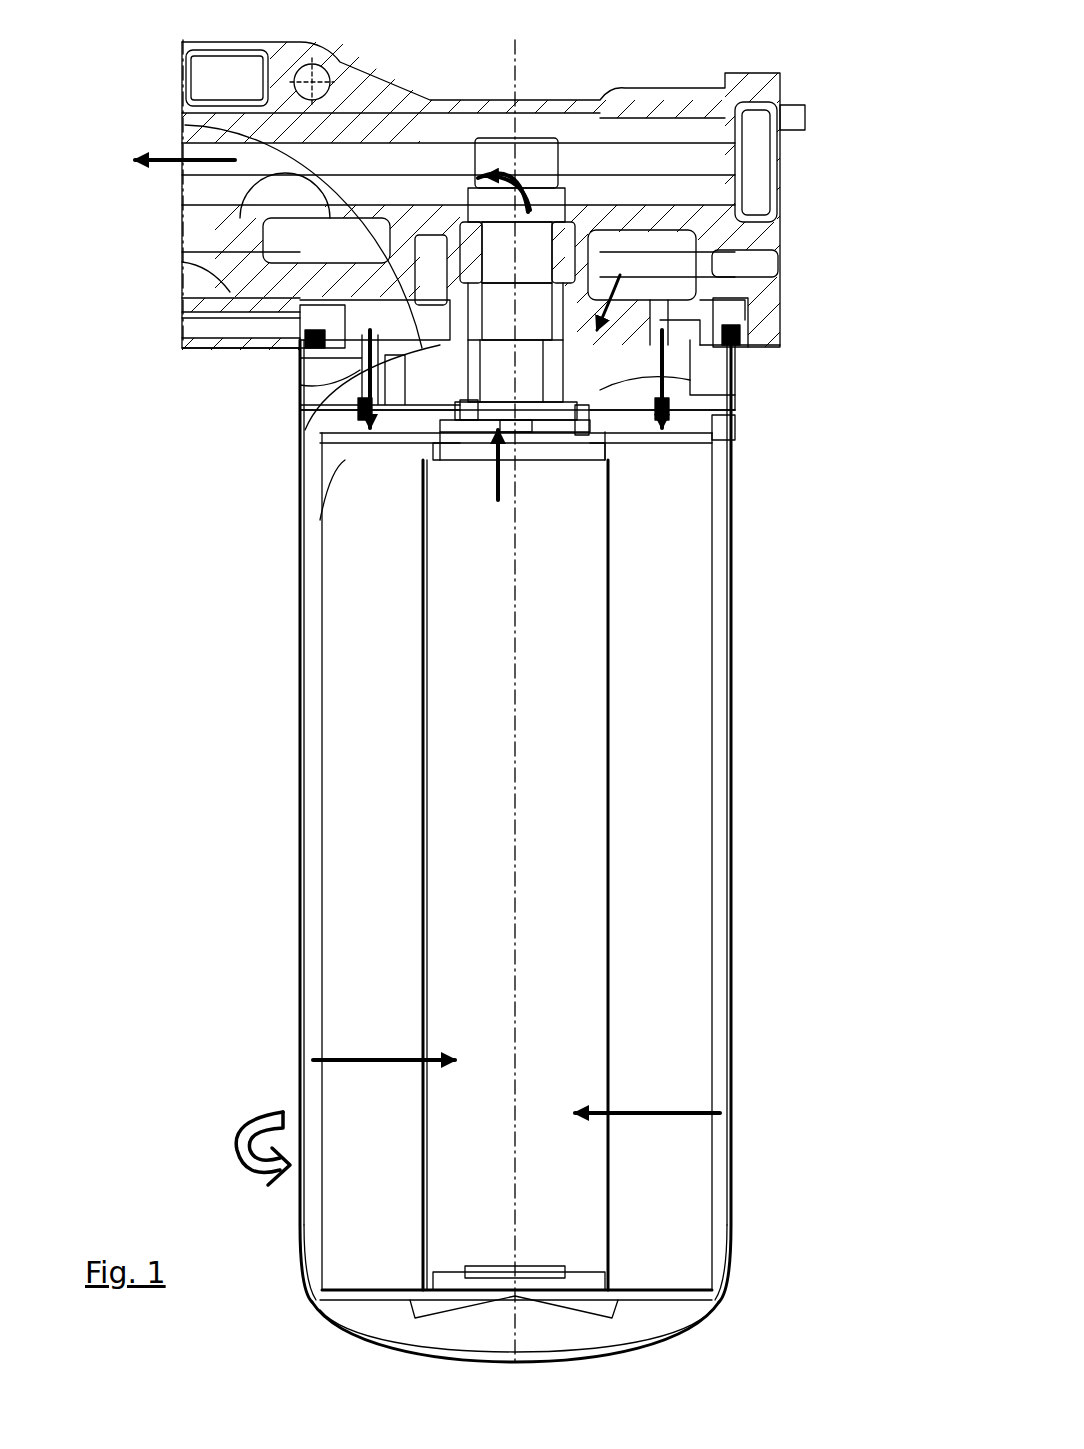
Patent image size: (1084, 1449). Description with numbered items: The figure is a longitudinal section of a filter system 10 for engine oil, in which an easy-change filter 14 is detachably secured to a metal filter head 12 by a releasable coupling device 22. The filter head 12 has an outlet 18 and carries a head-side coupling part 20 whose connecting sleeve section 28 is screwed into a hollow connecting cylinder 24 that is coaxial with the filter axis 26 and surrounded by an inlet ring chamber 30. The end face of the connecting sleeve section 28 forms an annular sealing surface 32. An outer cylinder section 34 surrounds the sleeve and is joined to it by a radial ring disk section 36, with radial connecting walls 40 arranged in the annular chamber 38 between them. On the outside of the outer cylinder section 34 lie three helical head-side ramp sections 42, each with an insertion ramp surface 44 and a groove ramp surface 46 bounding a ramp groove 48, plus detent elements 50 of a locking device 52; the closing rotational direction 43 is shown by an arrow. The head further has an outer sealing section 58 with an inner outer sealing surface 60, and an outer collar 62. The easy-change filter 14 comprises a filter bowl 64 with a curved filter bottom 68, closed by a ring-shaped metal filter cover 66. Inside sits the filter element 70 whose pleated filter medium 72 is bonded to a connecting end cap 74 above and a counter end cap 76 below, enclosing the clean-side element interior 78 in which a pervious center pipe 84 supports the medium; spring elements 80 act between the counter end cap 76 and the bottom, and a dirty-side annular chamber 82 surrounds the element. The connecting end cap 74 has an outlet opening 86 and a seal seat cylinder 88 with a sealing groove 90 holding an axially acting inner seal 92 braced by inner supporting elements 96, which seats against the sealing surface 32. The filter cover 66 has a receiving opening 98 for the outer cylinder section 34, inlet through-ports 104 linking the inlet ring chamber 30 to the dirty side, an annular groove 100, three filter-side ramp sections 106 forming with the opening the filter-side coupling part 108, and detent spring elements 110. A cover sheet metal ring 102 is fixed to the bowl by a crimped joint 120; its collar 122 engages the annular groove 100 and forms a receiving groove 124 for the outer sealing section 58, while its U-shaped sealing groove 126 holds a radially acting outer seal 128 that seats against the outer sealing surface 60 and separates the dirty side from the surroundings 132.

The filter system 10 is at (138, 63).
The filter head 12 is at (250, 55).
The easy-change filter 14 is at (300, 915).
The outlet 18 is at (190, 190).
The head-side coupling part 20 is at (642, 280).
The coupling device 22 is at (300, 372).
The connecting cylinder 24 is at (585, 240).
The filter axis 26 is at (520, 1020).
The connecting sleeve section 28 is at (506, 235).
The inlet ring chamber 30 is at (430, 345).
The sealing surface 32 is at (435, 445).
The outer cylinder section 34 is at (735, 435).
The radial ring disk section 36 is at (432, 320).
The annular chamber 38 is at (365, 447).
The radial connecting walls 40 is at (275, 228).
The head-side ramp sections 42 is at (300, 340).
The closing rotational direction 43 is at (232, 1155).
The insertion ramp surface 44 is at (628, 447).
The groove ramp surface 46 is at (340, 405).
The ramp groove 48 is at (335, 425).
The detent elements 50 is at (655, 292).
The locking device 52 is at (668, 330).
The outer sealing section 58 is at (300, 330).
The outer sealing surface 60 is at (245, 292).
The outer collar 62 is at (720, 290).
The filter bowl 64 is at (300, 1010).
The filter cover 66 is at (700, 392).
The filter bottom 68 is at (330, 1335).
The filter element 70 is at (340, 850).
The filter medium 72 is at (647, 1084).
The connecting end cap 74 is at (718, 445).
The counter end cap 76 is at (715, 1290).
The element interior 78 is at (410, 1131).
The spring elements 80 is at (640, 1320).
The dirty-side annular chamber 82 is at (722, 1150).
The center pipe 84 is at (425, 1100).
The outlet opening 86 is at (468, 452).
The seal seat cylinder 88 is at (565, 457).
The sealing groove 90 is at (520, 470).
The inner seal 92 is at (455, 482).
The inner supporting elements 96 is at (515, 445).
The receiving opening 98 is at (640, 470).
The annular groove 100 is at (735, 378).
The cover sheet metal ring 102 is at (700, 338).
The inlet through-ports 104 is at (300, 388).
The filter-side ramp sections 106 is at (295, 415).
The filter-side coupling part 108 is at (313, 522).
The detent spring elements 110 is at (683, 330).
The crimped joint 120 is at (722, 320).
The collar 122 is at (298, 362).
The receiving groove 124 is at (730, 352).
The sealing groove 126 is at (342, 300).
The outer seal 128 is at (705, 305).
The surroundings 132 is at (824, 930).